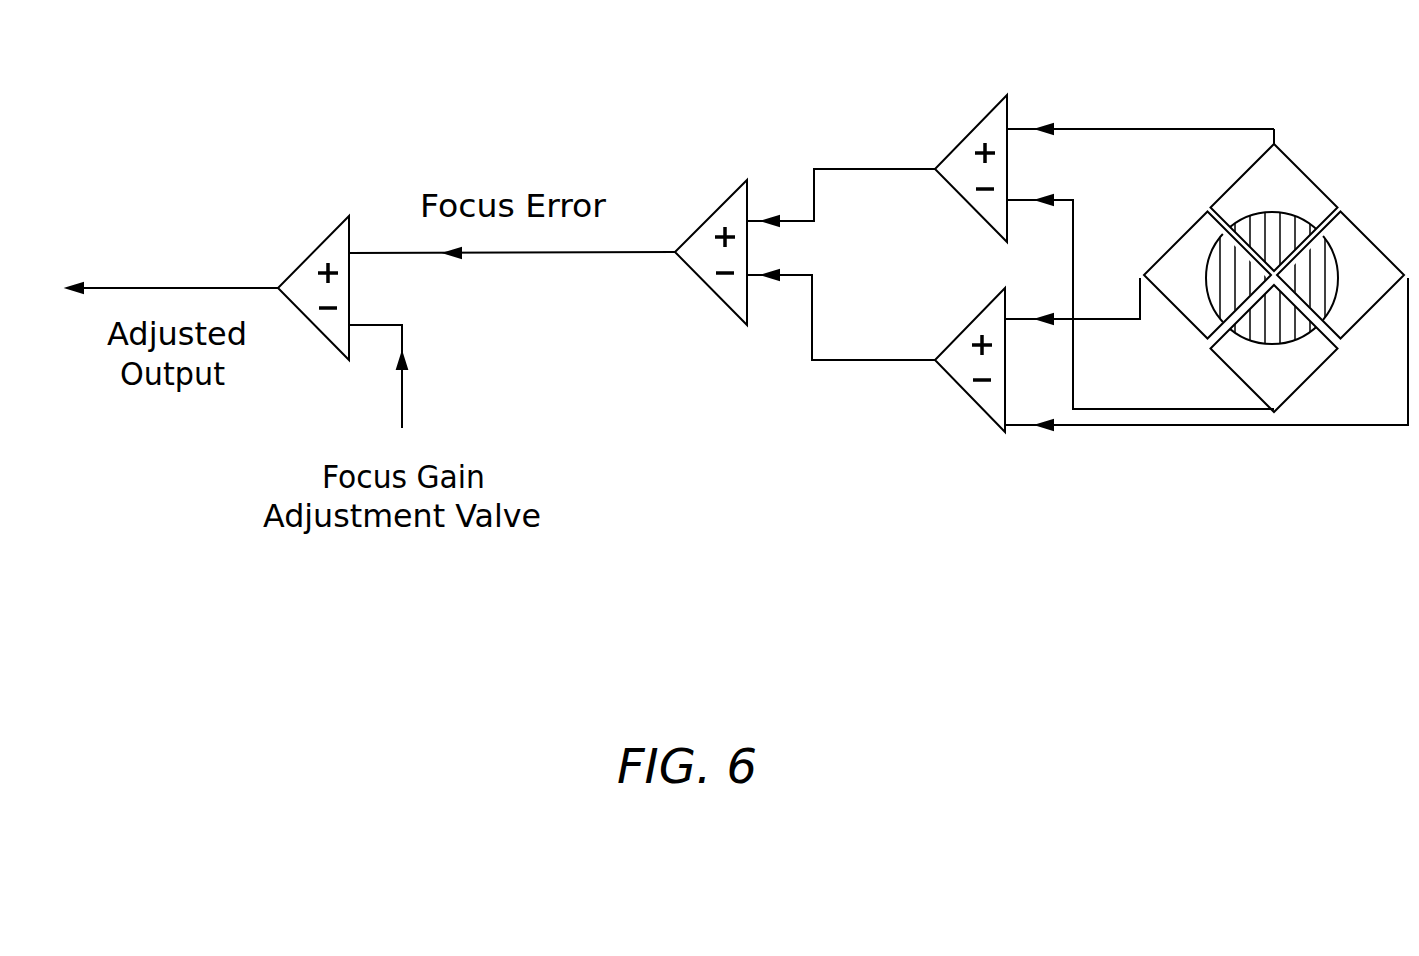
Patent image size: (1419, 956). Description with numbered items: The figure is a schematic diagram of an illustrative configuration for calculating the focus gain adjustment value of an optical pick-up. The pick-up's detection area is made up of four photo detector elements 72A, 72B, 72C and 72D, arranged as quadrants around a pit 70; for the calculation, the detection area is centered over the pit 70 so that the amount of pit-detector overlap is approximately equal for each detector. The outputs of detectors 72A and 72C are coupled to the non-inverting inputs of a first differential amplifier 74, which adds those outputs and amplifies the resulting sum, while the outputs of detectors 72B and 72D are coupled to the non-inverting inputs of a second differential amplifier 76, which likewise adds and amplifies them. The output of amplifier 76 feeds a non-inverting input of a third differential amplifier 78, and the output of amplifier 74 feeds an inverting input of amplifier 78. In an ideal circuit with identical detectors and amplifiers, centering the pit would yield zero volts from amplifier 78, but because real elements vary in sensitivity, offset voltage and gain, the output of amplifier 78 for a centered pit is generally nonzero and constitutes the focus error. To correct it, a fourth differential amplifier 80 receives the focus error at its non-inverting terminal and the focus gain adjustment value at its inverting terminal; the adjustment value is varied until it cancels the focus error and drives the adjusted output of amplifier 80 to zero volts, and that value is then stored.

The pit 70 is at (1255, 213).
The photo detector element 72A is at (1305, 172).
The photo detector element 72B is at (1180, 234).
The photo detector element 72C is at (1208, 347).
The photo detector element 72D is at (1368, 237).
The first differential amplifier 74 is at (987, 112).
The second differential amplifier 76 is at (967, 393).
The third differential amplifier 78 is at (720, 206).
The fourth differential amplifier 80 is at (315, 256).